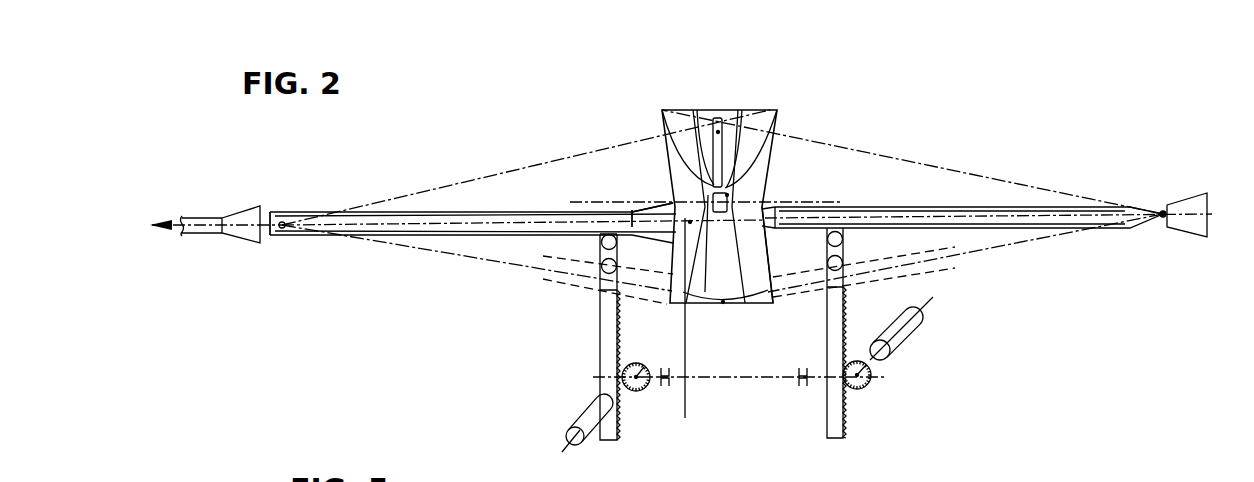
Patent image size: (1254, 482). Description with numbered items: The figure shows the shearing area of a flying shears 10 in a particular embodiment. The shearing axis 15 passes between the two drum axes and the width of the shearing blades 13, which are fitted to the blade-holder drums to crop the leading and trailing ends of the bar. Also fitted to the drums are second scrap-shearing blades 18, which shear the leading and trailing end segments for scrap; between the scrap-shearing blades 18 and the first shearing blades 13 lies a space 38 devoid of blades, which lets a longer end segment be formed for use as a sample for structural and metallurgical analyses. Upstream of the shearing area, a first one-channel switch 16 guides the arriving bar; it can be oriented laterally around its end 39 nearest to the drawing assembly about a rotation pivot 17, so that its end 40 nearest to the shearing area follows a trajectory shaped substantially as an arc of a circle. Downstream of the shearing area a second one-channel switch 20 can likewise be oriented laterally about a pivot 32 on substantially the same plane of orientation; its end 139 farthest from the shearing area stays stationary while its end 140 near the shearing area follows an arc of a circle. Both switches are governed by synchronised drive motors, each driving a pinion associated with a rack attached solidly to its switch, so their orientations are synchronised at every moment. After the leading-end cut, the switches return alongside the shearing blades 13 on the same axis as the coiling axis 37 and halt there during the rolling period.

The flying shears 10 is at (868, 103).
The shearing blades 13 is at (672, 202).
The shearing axis 15 is at (762, 203).
The first one-channel switch 16 is at (1010, 217).
The rotation pivot 17 is at (1162, 220).
The second scrap-shearing blades 18 is at (721, 128).
The second one-channel switch 20 is at (420, 221).
The pivot 32 is at (283, 220).
The coiling axis 37 is at (689, 336).
The space devoid of blades 38 is at (662, 110).
The end of first one-channel switch 39 is at (1222, 206).
The end of first one-channel switch 40 is at (776, 203).
The end of second one-channel switch 139 is at (273, 246).
The end of second one-channel switch 140 is at (636, 198).